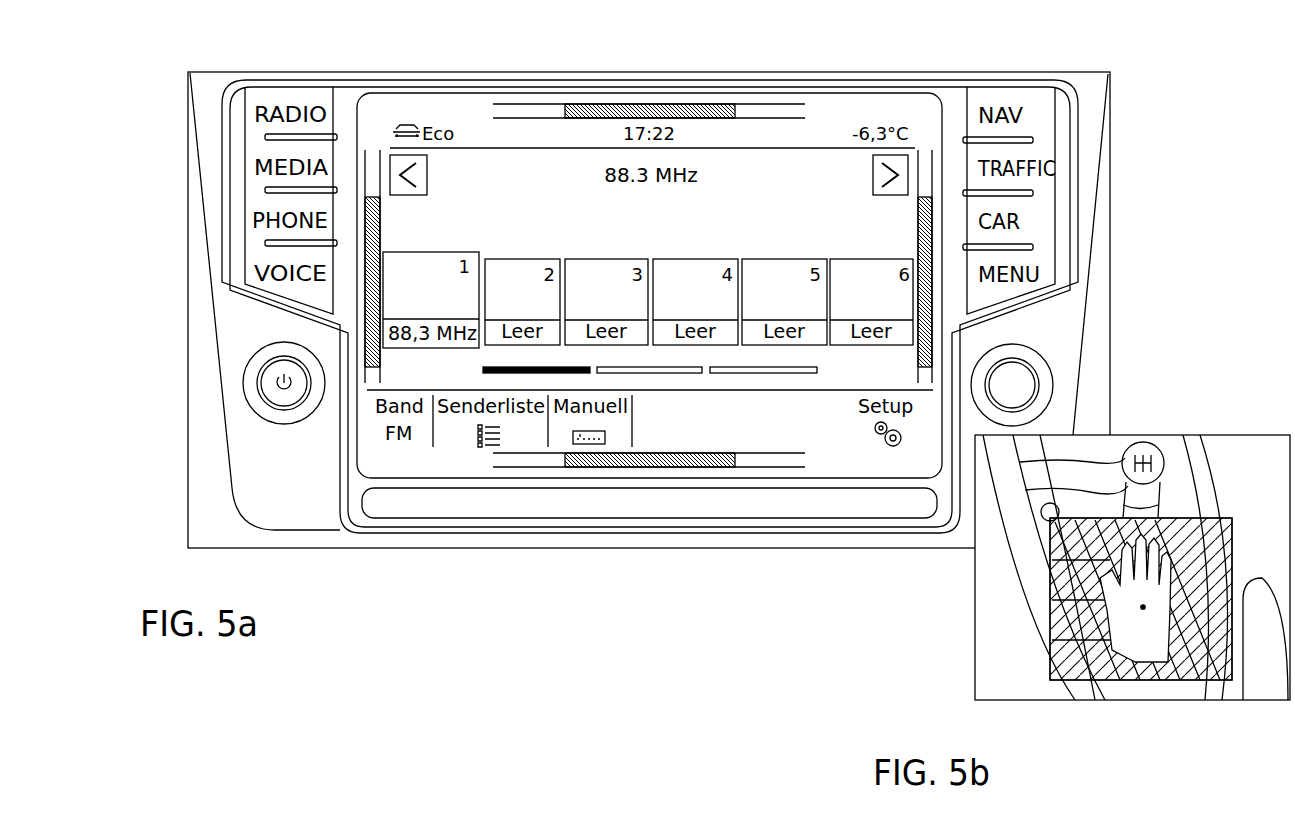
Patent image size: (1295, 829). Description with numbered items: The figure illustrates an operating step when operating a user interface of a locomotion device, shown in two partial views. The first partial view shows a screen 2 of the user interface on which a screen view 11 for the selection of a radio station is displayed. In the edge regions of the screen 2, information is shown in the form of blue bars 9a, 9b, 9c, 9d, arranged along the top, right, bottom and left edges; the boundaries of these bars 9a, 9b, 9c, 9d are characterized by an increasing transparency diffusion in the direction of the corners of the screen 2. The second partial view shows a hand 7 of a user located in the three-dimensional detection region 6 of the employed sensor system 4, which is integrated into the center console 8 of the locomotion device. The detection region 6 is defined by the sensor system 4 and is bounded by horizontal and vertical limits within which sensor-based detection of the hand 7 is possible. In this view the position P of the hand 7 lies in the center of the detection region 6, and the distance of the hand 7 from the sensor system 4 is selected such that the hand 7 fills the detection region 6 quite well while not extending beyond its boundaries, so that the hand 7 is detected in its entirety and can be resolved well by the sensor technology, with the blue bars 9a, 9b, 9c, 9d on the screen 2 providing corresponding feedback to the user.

In FIG. 5a, the screen 2 is at (1063, 59).
In FIG. 5a, the screen view 11 is at (490, 205).
In FIG. 5a, the blue bar 9a is at (590, 110).
In FIG. 5a, the blue bar 9b is at (925, 207).
In FIG. 5a, the blue bar 9c is at (600, 460).
In FIG. 5a, the blue bar 9d is at (373, 205).
In FIG. 5b, the sensor system 4 is at (1102, 605).
In FIG. 5b, the 3D-detection region 6 is at (1048, 597).
In FIG. 5b, the hand 7 is at (1140, 655).
In FIG. 5b, the center console 8 is at (1040, 512).
In FIG. 5b, the position P is at (1143, 607).